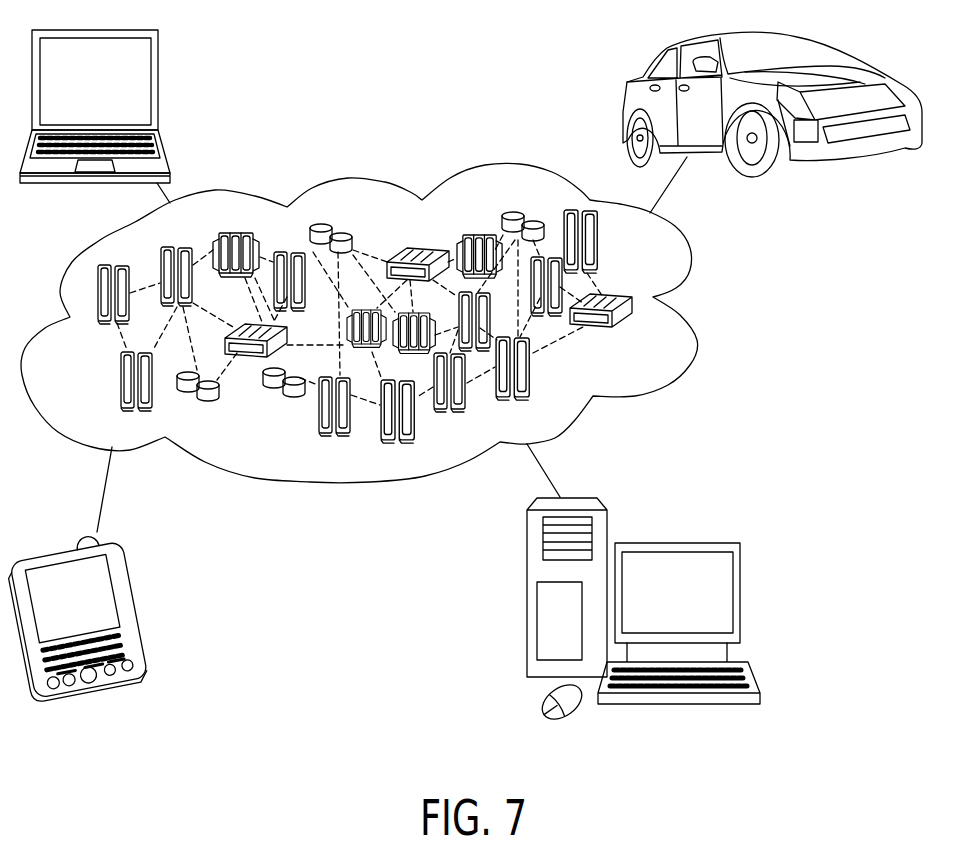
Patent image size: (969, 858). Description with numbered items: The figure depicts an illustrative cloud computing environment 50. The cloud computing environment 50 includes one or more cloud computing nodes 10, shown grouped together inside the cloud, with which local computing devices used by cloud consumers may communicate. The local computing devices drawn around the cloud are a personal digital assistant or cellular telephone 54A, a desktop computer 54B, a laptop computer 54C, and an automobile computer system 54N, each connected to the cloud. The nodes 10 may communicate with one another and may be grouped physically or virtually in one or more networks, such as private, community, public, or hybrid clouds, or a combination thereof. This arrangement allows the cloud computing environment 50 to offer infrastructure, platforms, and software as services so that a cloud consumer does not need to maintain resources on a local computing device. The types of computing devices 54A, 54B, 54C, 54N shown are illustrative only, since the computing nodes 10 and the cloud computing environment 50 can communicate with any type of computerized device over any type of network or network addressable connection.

The cloud computing nodes 10 is at (647, 350).
The cloud computing environment 50 is at (700, 248).
The personal digital assistant (PDA) or cellular telephone 54A is at (130, 590).
The desktop computer 54B is at (740, 592).
The laptop computer 54C is at (160, 85).
The automobile computer system 54N is at (810, 50).